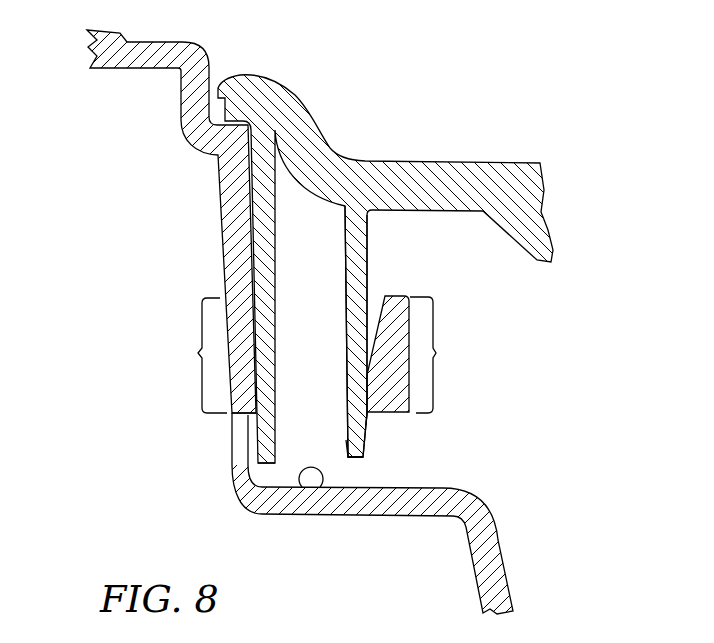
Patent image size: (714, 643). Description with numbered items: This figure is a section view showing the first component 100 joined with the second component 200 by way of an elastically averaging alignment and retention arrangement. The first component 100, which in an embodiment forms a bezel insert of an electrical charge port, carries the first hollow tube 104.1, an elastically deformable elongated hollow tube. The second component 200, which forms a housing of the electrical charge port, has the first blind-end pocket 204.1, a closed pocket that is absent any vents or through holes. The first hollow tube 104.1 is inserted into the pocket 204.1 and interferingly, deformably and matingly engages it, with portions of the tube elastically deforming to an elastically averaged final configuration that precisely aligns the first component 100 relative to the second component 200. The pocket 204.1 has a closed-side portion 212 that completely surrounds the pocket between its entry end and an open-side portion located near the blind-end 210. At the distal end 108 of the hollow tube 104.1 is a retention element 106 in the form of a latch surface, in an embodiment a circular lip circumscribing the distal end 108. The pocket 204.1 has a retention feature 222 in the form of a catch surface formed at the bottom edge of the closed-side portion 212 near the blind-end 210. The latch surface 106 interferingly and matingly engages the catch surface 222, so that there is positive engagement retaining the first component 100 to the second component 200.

The first component 100 is at (500, 150).
The first hollow tube 104.1 is at (367, 247).
The retention element 106 is at (250, 437).
The distal end 108 is at (383, 457).
The second component 200 is at (127, 80).
The first blind-end pocket 204.1 is at (378, 291).
The blind-end 210 is at (321, 487).
The closed-side portion 212 is at (198, 354).
The retention feature 222 is at (232, 402).